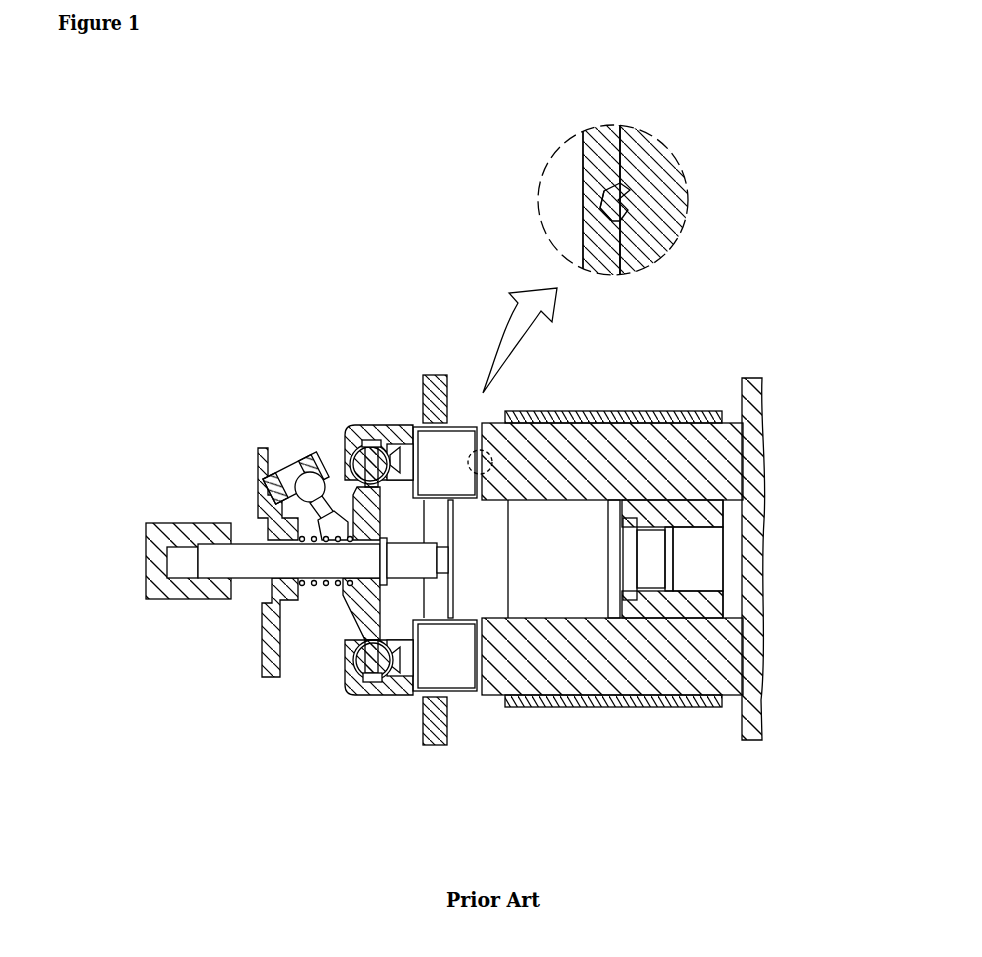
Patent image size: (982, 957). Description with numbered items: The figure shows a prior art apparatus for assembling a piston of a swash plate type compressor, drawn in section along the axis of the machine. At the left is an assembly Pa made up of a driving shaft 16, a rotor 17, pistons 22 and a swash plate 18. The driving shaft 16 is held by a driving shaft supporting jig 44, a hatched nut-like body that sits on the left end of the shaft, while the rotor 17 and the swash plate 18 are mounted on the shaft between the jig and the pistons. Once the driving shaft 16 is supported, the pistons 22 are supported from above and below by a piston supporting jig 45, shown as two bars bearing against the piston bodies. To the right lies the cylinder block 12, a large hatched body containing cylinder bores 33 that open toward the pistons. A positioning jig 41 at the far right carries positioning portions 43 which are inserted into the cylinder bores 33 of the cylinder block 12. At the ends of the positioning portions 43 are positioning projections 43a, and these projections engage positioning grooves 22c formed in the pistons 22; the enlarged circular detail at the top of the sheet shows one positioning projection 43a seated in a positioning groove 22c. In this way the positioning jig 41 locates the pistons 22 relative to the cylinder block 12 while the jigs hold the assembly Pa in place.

The cylinder block 12 is at (640, 411).
The driving shaft 16 is at (282, 565).
The rotor 17 is at (258, 462).
The swash plate 18 is at (350, 610).
The pistons 22 is at (395, 425).
The positioning grooves 22c is at (600, 193).
The cylinder bores 33 is at (688, 411).
The positioning jig 41 is at (764, 400).
The positioning portions 43 is at (542, 660).
The positioning projections 43a is at (610, 203).
The driving shaft supporting jig 44 is at (152, 585).
The piston supporting jig 45 is at (438, 732).
The assembly Pa is at (242, 490).